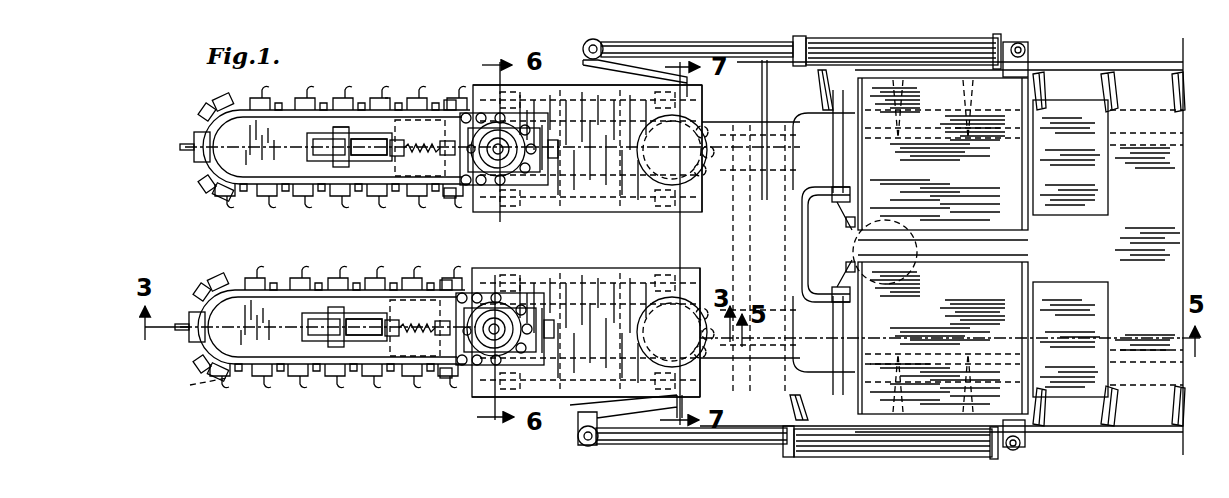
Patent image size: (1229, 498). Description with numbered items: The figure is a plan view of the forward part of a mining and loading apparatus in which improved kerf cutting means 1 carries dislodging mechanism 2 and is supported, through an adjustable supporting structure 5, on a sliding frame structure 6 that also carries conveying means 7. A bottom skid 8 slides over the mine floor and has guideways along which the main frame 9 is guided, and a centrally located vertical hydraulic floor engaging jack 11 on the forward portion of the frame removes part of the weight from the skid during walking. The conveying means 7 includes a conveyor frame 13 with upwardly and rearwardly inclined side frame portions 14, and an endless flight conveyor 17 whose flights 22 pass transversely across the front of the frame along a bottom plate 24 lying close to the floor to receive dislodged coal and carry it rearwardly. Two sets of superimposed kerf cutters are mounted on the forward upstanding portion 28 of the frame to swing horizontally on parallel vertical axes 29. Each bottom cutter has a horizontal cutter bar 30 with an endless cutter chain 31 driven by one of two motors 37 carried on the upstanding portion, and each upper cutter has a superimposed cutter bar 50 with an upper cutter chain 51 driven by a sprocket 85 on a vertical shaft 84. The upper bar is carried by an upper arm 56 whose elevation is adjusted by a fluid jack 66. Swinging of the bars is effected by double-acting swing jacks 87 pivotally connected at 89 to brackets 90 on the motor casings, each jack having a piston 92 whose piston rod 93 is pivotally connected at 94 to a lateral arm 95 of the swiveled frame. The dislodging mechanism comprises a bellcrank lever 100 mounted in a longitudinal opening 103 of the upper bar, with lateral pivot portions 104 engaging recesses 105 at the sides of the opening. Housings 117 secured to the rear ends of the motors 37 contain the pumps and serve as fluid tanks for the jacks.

The kerf cutting means 1 is at (389, 93).
The dislodging mechanism 2 is at (360, 131).
The adjustable supporting structure 5 is at (547, 85).
The sliding frame structure 6 is at (1163, 228).
The conveying means 7 is at (793, 384).
The bottom skid 8 is at (760, 402).
The main frame 9 is at (1109, 72).
The vertical hydraulic floor engaging jack 11 is at (895, 220).
The conveyor frame 13 is at (937, 422).
The side frame portions 14 is at (1148, 70).
The endless flight conveyor 17 is at (1100, 411).
The flights 22 is at (820, 92).
The bottom plate 24 is at (762, 80).
The forward upstanding portion 28 is at (678, 238).
The vertical axes 29 is at (681, 150).
The cutter bar 30 is at (212, 163).
The endless cutter chain 31 is at (213, 108).
The motors 37 is at (1008, 110).
The upper cutter bar 50 is at (265, 163).
The upper cutter chain 51 is at (317, 188).
The upper arm 56 is at (583, 231).
The fluid jack 66 is at (583, 320).
The vertical shaft 84 is at (499, 146).
The chain sprocket 85 is at (471, 152).
The upper bar swing jack 87 is at (860, 40).
The pivotal connection 89 is at (1022, 49).
The brackets 90 is at (1026, 60).
The piston 92 is at (830, 42).
The piston rod 93 is at (712, 42).
The pivotal connection 94 is at (594, 40).
The lateral arm 95 is at (590, 70).
The bellcrank lever 100 is at (371, 158).
The longitudinal opening 103 is at (308, 146).
The lateral pivot portions 104 is at (340, 166).
The recesses 105 is at (337, 128).
The housings 117 is at (1100, 188).